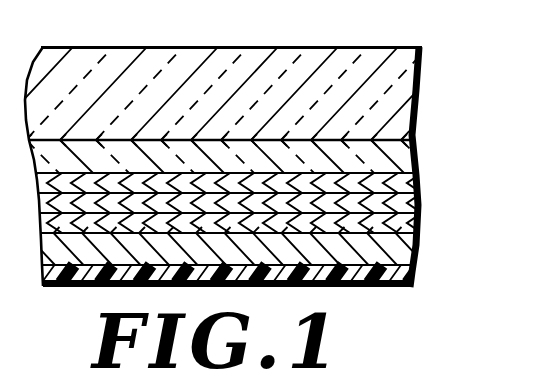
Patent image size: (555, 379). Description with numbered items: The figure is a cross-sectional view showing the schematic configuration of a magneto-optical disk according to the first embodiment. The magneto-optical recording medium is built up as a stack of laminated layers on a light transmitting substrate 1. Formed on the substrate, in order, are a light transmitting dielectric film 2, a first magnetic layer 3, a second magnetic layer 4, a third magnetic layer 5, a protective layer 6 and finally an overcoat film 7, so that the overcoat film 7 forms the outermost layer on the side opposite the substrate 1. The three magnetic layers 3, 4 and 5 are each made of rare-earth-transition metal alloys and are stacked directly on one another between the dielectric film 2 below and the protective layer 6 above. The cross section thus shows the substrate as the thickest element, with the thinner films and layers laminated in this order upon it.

The light transmitting substrate 1 is at (418, 77).
The light transmitting dielectric film 2 is at (415, 148).
The magnetic layer (first magnetic layer) 3 is at (417, 152).
The magnetic layer (second magnetic layer) 4 is at (420, 197).
The magnetic layer (third magnetic layer) 5 is at (420, 222).
The protective layer 6 is at (417, 252).
The overcoat film 7 is at (413, 274).